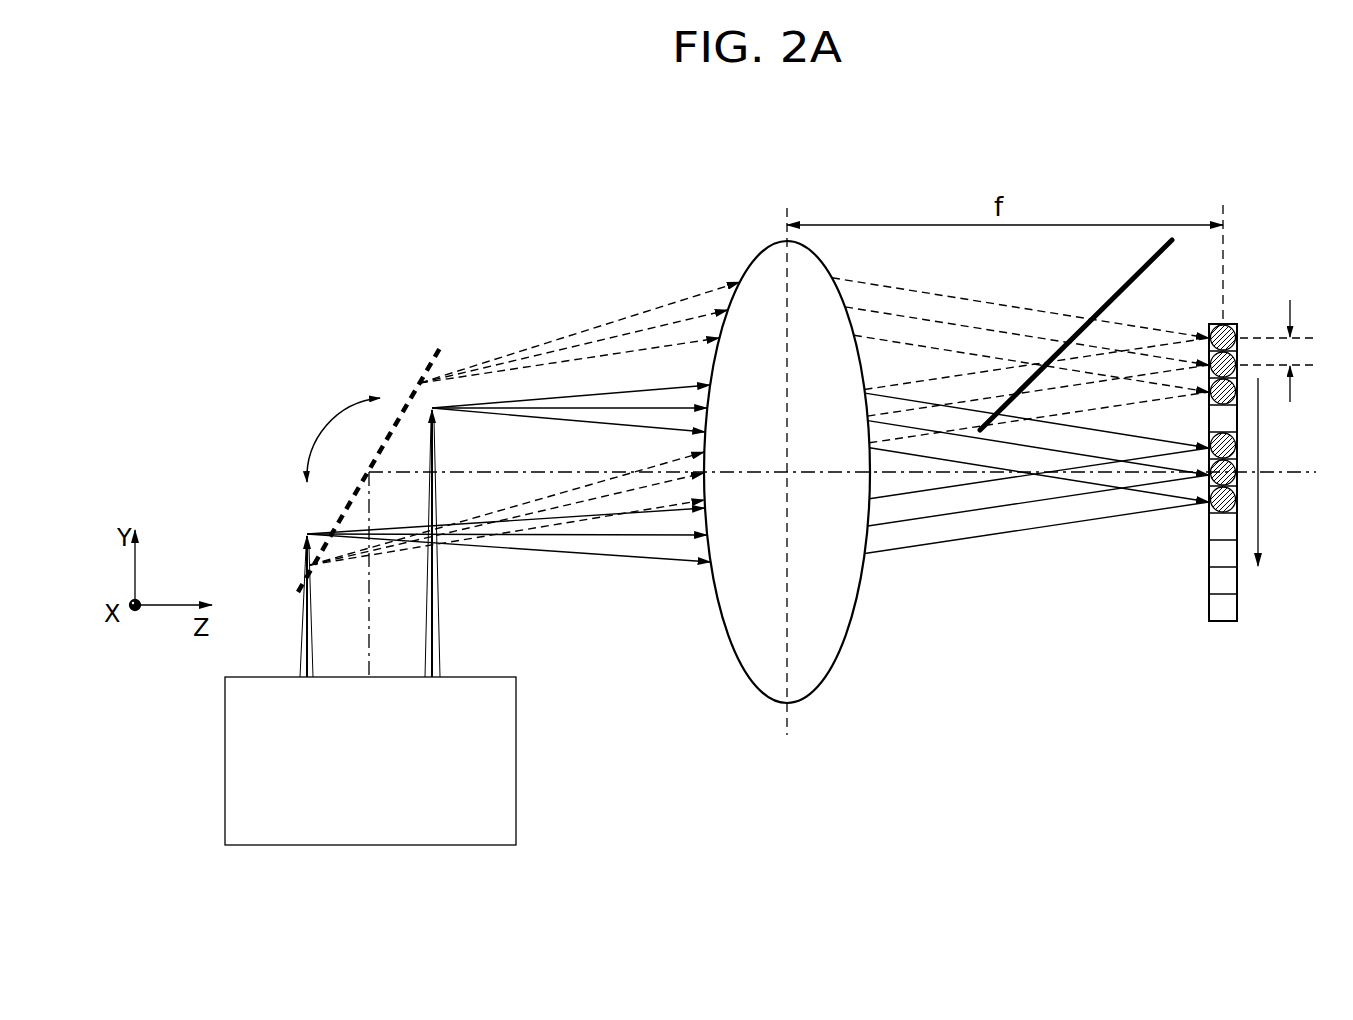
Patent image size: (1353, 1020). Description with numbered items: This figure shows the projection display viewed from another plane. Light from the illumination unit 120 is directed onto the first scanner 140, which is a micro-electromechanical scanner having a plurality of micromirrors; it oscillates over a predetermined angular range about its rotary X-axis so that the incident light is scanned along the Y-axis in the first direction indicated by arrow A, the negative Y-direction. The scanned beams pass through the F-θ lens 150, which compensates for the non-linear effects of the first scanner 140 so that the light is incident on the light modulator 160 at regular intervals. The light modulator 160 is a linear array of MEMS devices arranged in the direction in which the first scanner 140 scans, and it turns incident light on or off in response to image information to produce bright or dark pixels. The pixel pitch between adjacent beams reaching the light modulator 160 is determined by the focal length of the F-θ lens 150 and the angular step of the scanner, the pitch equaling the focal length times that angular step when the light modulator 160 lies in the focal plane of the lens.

The illumination unit 120 is at (516, 745).
The first scanner 140 is at (285, 552).
The F-θ lens 150 is at (757, 262).
The light modulator 160 is at (1229, 625).